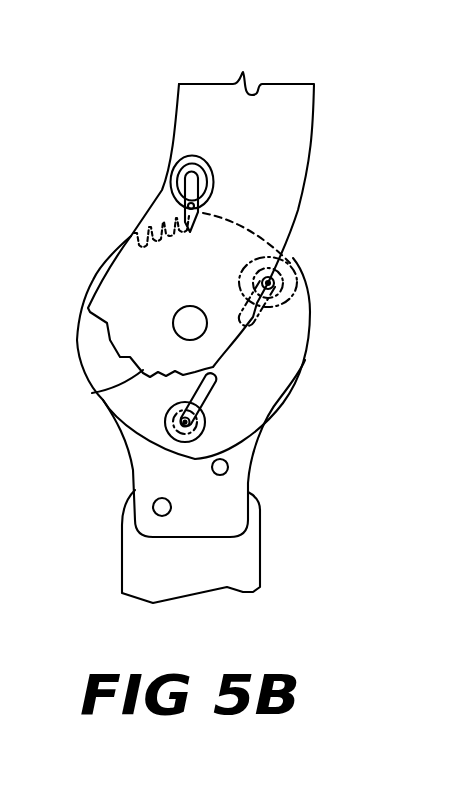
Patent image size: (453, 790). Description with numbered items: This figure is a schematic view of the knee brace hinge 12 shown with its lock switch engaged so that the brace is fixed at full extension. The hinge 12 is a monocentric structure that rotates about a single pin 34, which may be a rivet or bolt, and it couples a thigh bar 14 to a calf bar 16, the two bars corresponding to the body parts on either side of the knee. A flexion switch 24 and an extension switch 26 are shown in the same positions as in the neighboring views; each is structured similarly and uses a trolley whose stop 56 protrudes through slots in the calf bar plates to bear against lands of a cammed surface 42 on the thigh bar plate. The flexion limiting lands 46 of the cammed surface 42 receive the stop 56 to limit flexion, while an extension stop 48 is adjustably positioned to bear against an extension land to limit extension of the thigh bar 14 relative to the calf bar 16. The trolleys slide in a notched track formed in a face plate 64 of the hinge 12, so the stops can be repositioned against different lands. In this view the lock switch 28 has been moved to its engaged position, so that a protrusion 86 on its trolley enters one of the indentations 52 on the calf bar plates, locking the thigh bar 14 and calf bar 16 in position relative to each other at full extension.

The hinge 12 is at (308, 379).
The thigh bar 14 is at (300, 101).
The calf bar 16 is at (247, 550).
The flexion switch 24 is at (207, 415).
The extension switch 26 is at (294, 262).
The lock switch 28 is at (180, 172).
The pin 34 is at (190, 306).
The cammed surface 42 is at (110, 340).
The flexion limiting lands 46 is at (92, 393).
The extension stop 48 is at (243, 330).
The indentations 52 is at (147, 228).
The stop 56 is at (256, 446).
The face plate 64 is at (275, 382).
The protrusion 86 is at (205, 215).